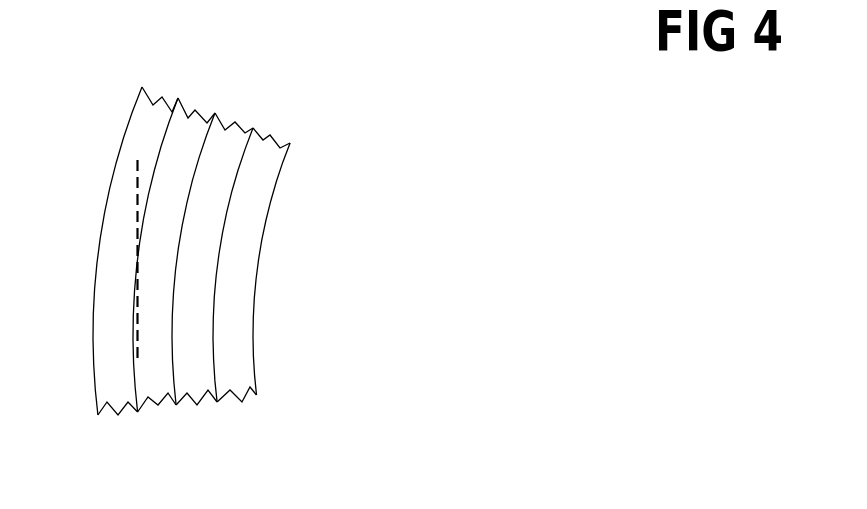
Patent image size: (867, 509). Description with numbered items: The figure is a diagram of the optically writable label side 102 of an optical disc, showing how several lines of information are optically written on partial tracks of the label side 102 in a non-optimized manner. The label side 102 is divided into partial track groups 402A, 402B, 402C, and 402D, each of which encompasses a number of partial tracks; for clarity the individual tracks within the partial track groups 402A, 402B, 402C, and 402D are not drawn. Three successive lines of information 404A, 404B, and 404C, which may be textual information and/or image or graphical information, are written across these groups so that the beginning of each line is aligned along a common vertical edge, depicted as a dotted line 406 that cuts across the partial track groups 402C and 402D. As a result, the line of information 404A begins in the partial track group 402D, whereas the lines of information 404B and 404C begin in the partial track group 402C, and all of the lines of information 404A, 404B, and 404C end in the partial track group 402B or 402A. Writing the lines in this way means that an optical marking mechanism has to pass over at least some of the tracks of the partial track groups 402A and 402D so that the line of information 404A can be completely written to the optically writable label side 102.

The optically writable label side 102 is at (445, 351).
The partial track group 402A is at (241, 401).
The partial track group 402B is at (266, 87).
The partial track group 402C is at (158, 406).
The partial track group 402D is at (140, 110).
The line of information 404A is at (218, 210).
The line of information 404B is at (218, 265).
The line of information 404C is at (218, 320).
The dotted line 406 is at (137, 178).